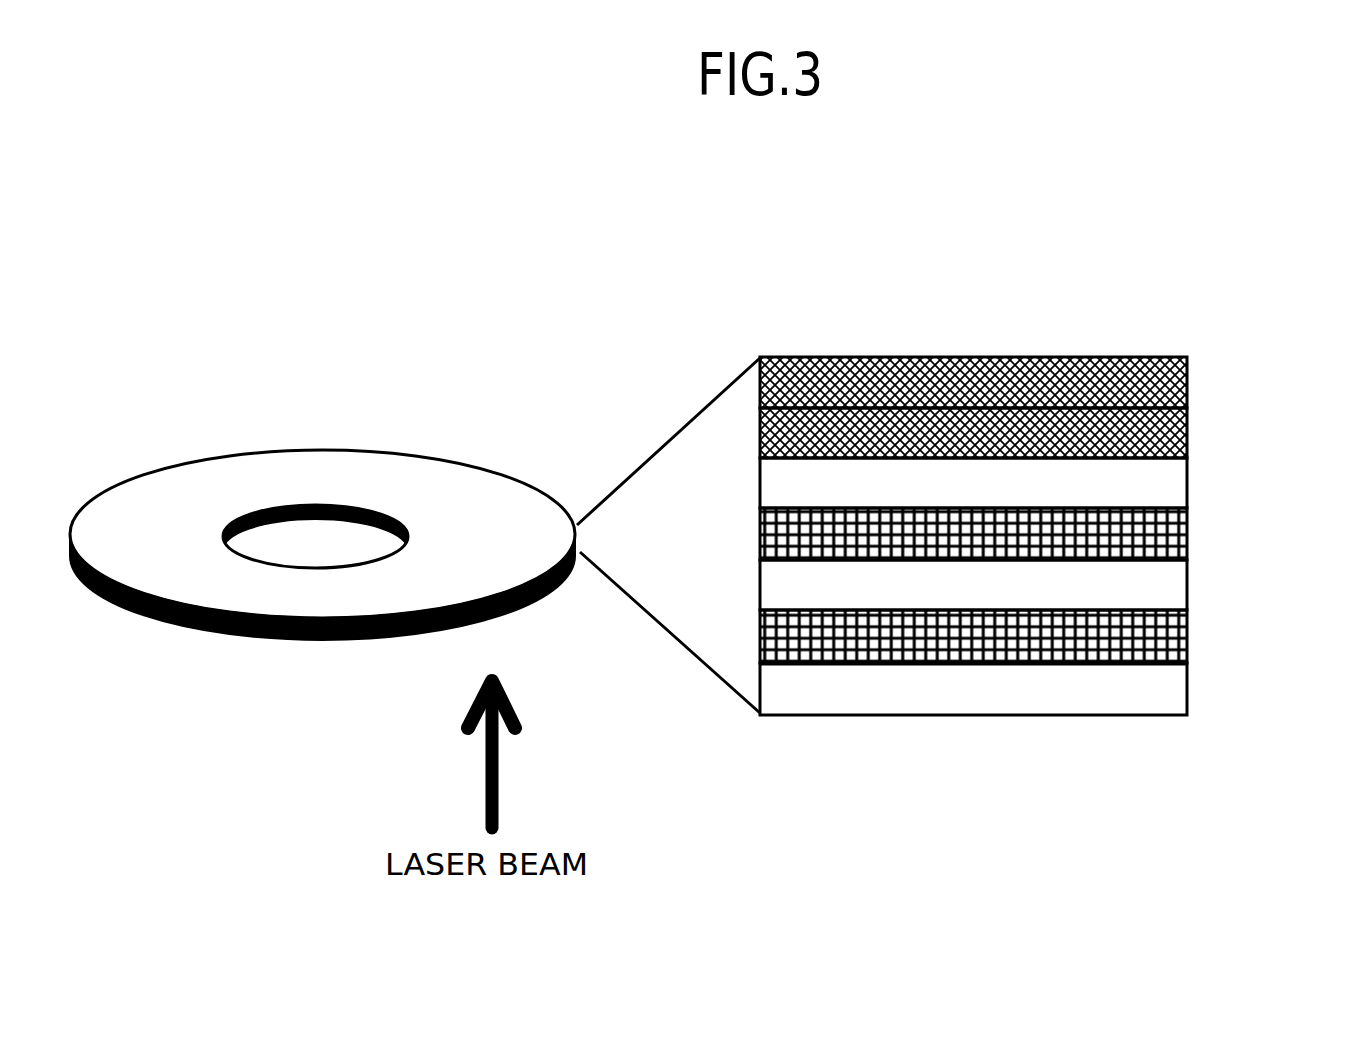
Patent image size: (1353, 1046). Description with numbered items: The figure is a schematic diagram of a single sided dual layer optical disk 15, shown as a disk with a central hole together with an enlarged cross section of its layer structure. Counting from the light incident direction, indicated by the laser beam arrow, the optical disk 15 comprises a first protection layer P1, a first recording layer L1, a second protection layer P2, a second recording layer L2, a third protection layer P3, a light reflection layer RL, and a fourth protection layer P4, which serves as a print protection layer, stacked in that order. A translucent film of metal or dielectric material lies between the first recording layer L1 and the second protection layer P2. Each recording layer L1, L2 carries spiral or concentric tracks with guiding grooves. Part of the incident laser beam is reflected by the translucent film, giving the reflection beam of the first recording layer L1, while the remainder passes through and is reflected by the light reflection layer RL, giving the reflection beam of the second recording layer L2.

The optical disk 15 is at (414, 454).
The fourth protection layer P4 is at (1187, 383).
The light reflection layer RL is at (1187, 433).
The third protection layer P3 is at (1187, 483).
The second recording layer L2 is at (1187, 537).
The second protection layer P2 is at (1187, 583).
The first recording layer L1 is at (1187, 637).
The first protection layer P1 is at (1187, 690).